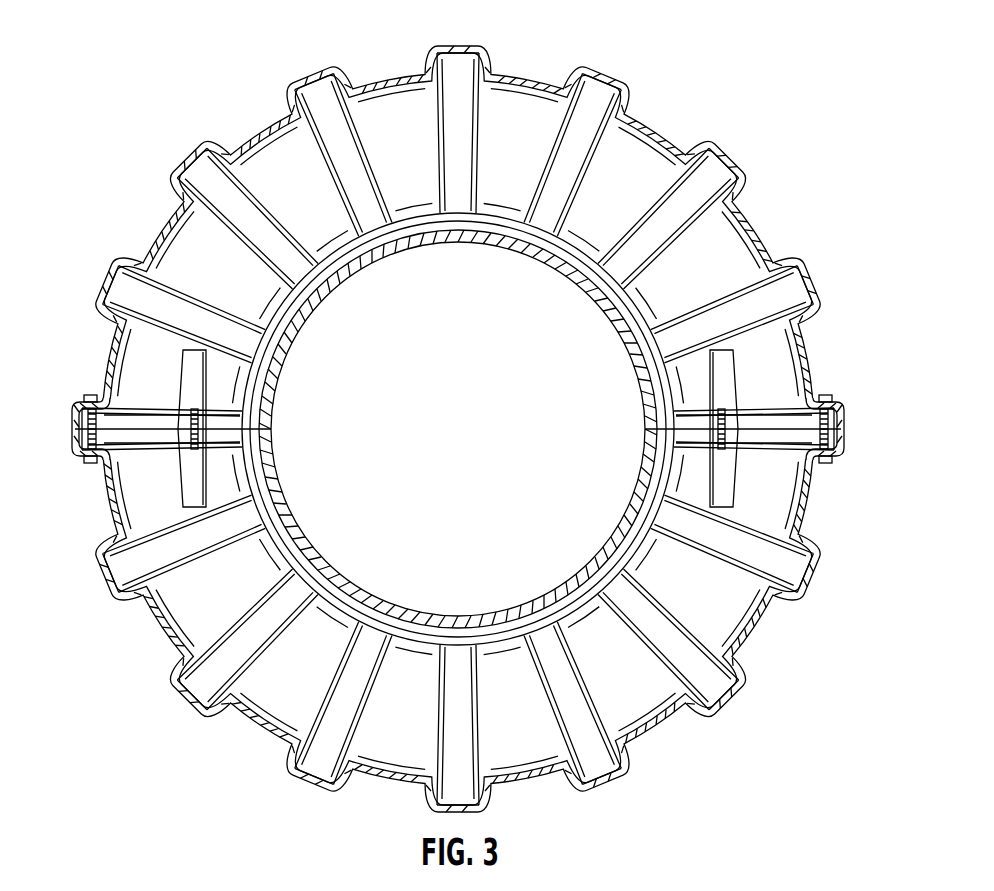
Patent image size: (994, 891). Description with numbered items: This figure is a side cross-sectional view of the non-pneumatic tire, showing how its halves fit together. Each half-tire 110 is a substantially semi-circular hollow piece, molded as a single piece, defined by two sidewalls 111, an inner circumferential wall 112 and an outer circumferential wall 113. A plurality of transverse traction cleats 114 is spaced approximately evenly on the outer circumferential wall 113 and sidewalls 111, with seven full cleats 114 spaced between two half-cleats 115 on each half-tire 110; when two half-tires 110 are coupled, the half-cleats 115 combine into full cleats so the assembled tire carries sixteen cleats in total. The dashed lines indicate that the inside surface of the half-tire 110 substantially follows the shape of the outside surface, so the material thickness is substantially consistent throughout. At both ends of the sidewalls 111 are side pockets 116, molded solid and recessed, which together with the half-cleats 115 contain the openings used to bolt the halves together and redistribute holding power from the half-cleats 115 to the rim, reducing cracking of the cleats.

The half-tire 110 is at (246, 114).
The sidewall 111 is at (727, 262).
The inner circumferential wall 112 is at (577, 282).
The outer circumferential wall 113 is at (532, 76).
The transverse traction cleat 114 is at (615, 74).
The half-cleat 115 is at (840, 404).
The side pocket 116 is at (189, 381).